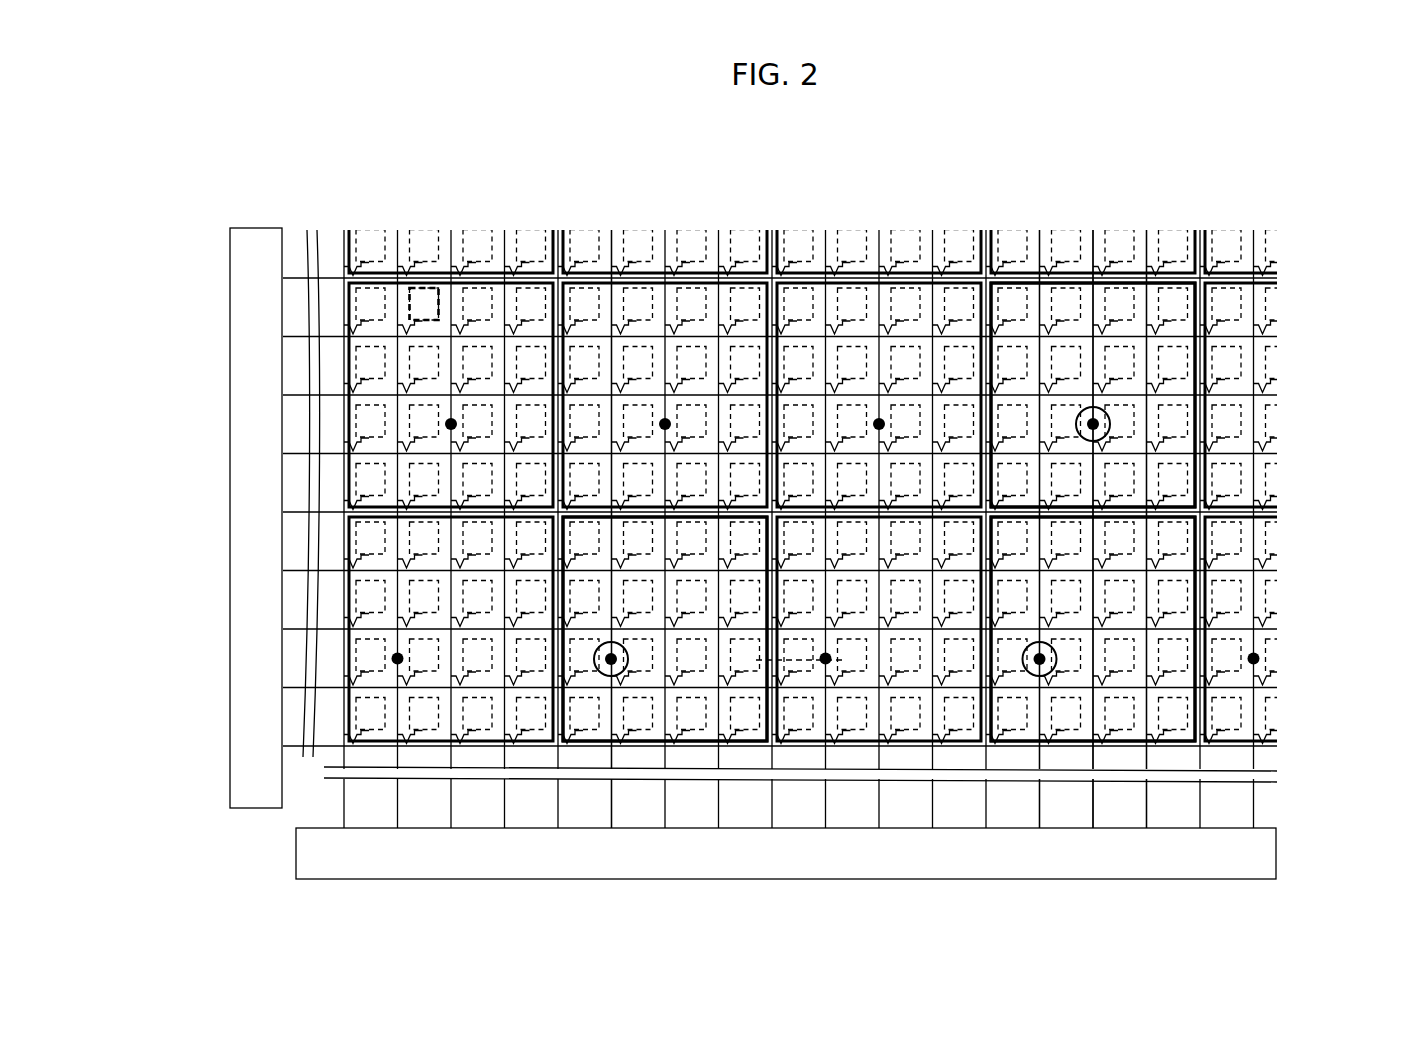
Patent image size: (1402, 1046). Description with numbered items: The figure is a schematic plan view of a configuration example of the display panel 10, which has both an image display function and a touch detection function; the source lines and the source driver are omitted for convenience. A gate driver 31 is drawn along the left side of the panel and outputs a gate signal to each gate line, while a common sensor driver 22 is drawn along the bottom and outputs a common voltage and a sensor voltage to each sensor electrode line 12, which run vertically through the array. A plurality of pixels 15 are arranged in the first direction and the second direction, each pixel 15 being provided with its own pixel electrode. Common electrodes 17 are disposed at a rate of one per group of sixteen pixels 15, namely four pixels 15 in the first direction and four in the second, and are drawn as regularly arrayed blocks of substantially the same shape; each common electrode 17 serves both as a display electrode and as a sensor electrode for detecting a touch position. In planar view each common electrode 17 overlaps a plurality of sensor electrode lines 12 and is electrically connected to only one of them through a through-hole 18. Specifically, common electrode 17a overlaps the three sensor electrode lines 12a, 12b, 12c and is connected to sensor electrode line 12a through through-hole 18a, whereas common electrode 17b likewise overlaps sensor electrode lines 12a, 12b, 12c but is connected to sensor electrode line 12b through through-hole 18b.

The display panel 10 is at (1265, 210).
The sensor electrode line 12 is at (614, 790).
The sensor electrode line 12a is at (1042, 792).
The sensor electrode line 12b is at (1096, 792).
The sensor electrode line 12c is at (1150, 792).
The pixel 15 is at (422, 285).
The common electrode 17 is at (692, 748).
The common electrode 17a is at (1168, 750).
The common electrode 17b is at (1193, 473).
The through-hole 18 is at (607, 676).
The through-hole 18a is at (1036, 677).
The through-hole 18b is at (1112, 424).
The common sensor driver 22 is at (803, 880).
The gate driver 31 is at (230, 488).